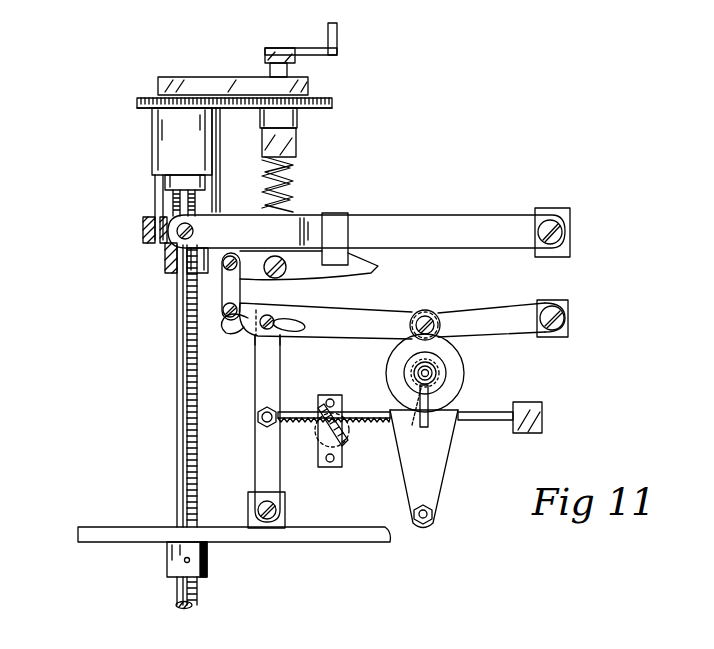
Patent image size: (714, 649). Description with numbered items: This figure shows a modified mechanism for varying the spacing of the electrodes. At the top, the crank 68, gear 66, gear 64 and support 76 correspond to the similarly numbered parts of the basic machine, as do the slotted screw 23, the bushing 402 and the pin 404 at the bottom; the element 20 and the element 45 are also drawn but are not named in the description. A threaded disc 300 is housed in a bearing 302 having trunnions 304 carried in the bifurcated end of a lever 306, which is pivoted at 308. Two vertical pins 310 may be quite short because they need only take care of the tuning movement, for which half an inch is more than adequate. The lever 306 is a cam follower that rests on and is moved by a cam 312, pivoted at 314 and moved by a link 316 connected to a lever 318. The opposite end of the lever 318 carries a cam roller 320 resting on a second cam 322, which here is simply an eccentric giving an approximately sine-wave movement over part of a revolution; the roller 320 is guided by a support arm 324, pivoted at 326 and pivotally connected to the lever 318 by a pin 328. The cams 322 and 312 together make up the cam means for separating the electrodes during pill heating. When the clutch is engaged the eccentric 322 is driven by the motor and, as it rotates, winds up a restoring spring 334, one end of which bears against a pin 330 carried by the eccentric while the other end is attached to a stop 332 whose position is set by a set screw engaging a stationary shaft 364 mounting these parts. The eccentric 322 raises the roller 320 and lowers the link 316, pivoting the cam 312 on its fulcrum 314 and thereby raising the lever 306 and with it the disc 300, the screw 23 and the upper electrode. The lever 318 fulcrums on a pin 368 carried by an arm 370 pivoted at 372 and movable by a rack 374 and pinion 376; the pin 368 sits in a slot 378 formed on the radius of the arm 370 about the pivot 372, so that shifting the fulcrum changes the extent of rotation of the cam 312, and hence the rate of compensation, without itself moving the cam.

The workpiece 20 is at (178, 604).
The slotted screw 23 is at (200, 596).
The pawl 45 is at (345, 447).
The gear 64 is at (137, 100).
The gear 66 is at (332, 101).
The crank 68 is at (333, 37).
The support 76 is at (216, 75).
The threaded disc 300 is at (165, 258).
The bearing 302 is at (143, 232).
The trunnions 304 is at (190, 228).
The lever 306 is at (392, 225).
The pivot 308 is at (565, 232).
The vertical pins 310 is at (155, 190).
The cam 312 is at (372, 265).
The pivot 314 is at (283, 276).
The link 316 is at (240, 294).
The lever 318 is at (340, 325).
The cam roller 320 is at (428, 312).
The second cam 322 is at (465, 380).
The support arm 324 is at (480, 315).
The pivot 326 is at (565, 318).
The pin 328 is at (407, 340).
The pin 330 is at (425, 428).
The stop 332 is at (460, 420).
The restoring spring 334 is at (419, 427).
The stationary shaft 364 is at (433, 372).
The pin 368 is at (277, 330).
The arm 370 is at (255, 390).
The pivot 372 is at (278, 512).
The rack 374 is at (303, 423).
The pinion 376 is at (350, 434).
The slot 378 is at (238, 332).
The bushing 402 is at (208, 556).
The pin 404 is at (184, 561).